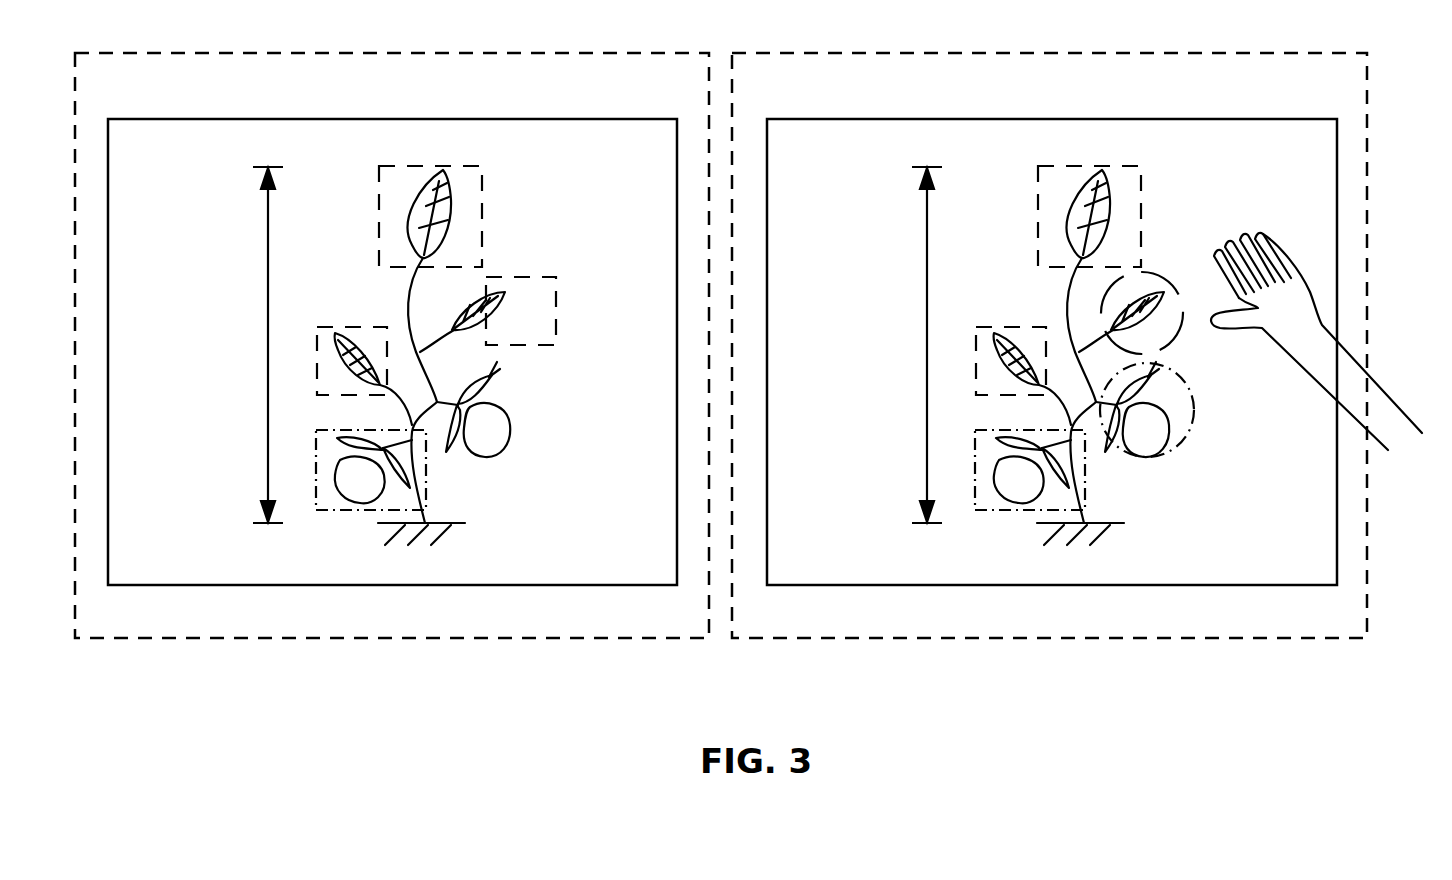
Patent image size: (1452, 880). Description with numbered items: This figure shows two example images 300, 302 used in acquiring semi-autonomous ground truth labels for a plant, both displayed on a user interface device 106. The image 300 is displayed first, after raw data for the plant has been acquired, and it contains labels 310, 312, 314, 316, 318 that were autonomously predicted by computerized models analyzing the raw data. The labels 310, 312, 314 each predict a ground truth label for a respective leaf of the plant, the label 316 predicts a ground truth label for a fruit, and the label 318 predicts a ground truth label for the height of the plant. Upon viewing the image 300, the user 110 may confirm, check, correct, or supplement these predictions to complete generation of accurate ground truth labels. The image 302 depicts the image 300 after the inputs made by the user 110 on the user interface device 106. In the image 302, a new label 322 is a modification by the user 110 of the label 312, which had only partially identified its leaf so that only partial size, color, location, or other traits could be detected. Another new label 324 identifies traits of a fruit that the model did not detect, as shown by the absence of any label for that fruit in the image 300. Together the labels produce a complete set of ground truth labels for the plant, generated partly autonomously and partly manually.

The user interface device 106 is at (662, 94).
The image 300 is at (643, 562).
The image 302 is at (1302, 562).
The label 310 is at (483, 212).
The label 312 is at (529, 277).
The label 314 is at (362, 327).
The label 316 is at (316, 510).
The label 318 is at (232, 300).
The new label 322 is at (1155, 275).
The new label 324 is at (1152, 460).
The user 110 is at (1378, 386).